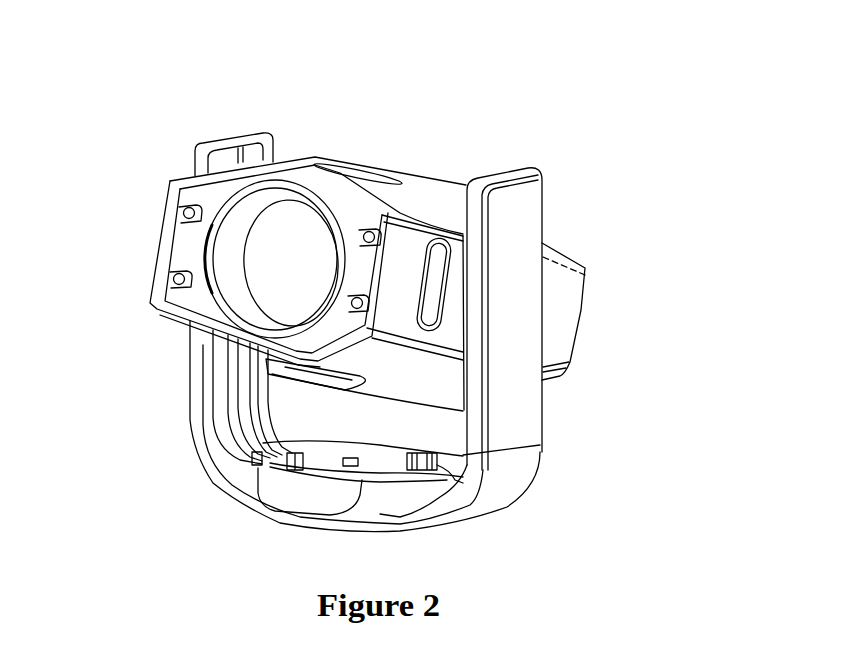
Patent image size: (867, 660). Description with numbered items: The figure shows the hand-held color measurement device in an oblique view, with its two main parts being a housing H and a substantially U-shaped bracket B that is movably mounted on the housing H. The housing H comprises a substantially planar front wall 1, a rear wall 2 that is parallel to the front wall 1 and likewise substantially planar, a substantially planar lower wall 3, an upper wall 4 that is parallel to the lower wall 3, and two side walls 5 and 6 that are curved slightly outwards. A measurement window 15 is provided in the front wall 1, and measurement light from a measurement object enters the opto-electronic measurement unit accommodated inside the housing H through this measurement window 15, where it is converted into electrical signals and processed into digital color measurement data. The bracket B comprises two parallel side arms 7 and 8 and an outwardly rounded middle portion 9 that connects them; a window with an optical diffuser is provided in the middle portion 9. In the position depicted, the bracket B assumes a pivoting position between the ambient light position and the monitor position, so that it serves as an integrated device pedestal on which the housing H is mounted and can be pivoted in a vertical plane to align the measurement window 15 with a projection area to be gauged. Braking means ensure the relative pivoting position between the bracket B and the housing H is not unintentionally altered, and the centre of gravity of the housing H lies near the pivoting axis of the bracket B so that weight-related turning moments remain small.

The front wall 1 is at (195, 311).
The rear wall 2 is at (587, 308).
The lower wall 3 is at (560, 342).
The upper wall 4 is at (160, 237).
The side wall 5 is at (428, 195).
The side wall 6 is at (408, 377).
The side arm 7 is at (525, 213).
The side arm 8 is at (195, 158).
The middle portion 9 is at (280, 508).
The measurement window 15 is at (288, 237).
The housing H is at (397, 160).
The bracket B is at (550, 473).